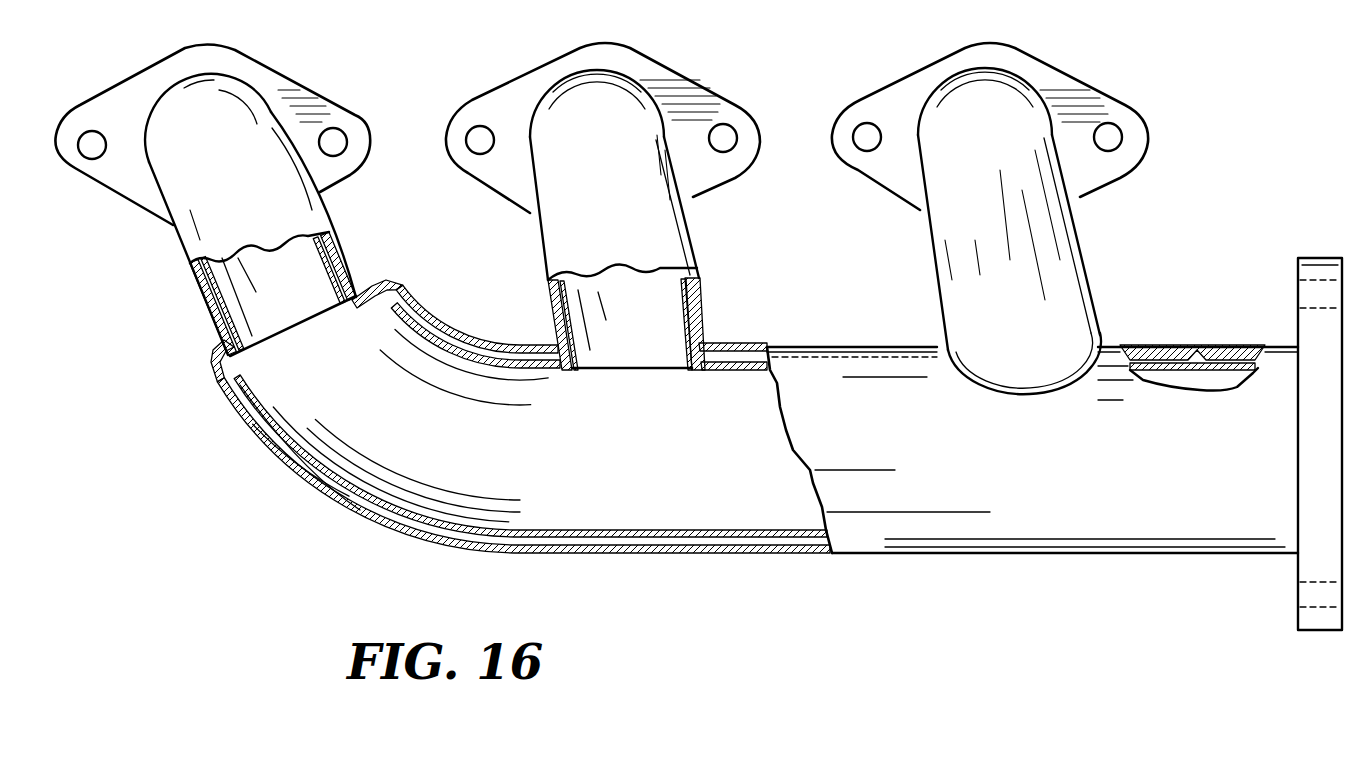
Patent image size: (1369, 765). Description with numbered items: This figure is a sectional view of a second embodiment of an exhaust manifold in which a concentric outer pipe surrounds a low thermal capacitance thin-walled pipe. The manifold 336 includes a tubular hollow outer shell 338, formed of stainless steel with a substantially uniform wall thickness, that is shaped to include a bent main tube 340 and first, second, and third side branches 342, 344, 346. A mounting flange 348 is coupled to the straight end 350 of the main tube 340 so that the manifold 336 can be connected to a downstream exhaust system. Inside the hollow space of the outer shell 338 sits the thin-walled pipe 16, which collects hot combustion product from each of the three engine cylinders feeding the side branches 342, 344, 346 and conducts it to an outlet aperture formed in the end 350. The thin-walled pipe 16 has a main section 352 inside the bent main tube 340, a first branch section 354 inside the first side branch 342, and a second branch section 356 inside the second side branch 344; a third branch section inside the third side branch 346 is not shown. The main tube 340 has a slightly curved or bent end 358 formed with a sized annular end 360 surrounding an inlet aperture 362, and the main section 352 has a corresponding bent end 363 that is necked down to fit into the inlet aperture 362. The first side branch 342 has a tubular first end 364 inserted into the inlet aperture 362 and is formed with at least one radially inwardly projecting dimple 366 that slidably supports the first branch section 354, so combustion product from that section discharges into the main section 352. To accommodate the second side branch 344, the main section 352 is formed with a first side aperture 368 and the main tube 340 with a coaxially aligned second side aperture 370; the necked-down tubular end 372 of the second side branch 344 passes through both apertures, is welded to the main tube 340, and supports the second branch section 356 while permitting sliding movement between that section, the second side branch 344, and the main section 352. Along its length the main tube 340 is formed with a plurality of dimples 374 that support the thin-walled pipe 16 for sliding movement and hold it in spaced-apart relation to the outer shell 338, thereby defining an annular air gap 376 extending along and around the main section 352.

The thin-walled pipe 16 is at (318, 247).
The manifold 336 is at (885, 556).
The tubular hollow outer shell 338 is at (201, 290).
The bent main tube 340 is at (745, 343).
The first side branch 342 is at (331, 214).
The second side branch 344 is at (700, 263).
The third side branch 346 is at (1060, 280).
The mounting flange 348 is at (1317, 630).
The straight end 350 is at (258, 438).
The main section 352 is at (812, 540).
The first branch section 354 is at (228, 304).
The second branch section 356 is at (590, 315).
The bent end 358 is at (420, 293).
The sized annular end 360 is at (374, 284).
The inlet aperture 362 is at (347, 300).
The bent end 363 is at (270, 405).
The tubular first end 364 is at (210, 333).
The dimple 366 is at (338, 272).
The first side aperture 368 is at (692, 372).
The second side aperture 370 is at (697, 357).
The necked-down tubular end 372 is at (707, 322).
The dimples 374 is at (1200, 350).
The annular air gap 376 is at (440, 533).